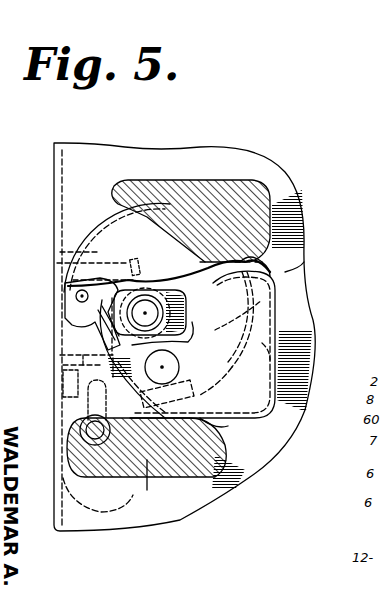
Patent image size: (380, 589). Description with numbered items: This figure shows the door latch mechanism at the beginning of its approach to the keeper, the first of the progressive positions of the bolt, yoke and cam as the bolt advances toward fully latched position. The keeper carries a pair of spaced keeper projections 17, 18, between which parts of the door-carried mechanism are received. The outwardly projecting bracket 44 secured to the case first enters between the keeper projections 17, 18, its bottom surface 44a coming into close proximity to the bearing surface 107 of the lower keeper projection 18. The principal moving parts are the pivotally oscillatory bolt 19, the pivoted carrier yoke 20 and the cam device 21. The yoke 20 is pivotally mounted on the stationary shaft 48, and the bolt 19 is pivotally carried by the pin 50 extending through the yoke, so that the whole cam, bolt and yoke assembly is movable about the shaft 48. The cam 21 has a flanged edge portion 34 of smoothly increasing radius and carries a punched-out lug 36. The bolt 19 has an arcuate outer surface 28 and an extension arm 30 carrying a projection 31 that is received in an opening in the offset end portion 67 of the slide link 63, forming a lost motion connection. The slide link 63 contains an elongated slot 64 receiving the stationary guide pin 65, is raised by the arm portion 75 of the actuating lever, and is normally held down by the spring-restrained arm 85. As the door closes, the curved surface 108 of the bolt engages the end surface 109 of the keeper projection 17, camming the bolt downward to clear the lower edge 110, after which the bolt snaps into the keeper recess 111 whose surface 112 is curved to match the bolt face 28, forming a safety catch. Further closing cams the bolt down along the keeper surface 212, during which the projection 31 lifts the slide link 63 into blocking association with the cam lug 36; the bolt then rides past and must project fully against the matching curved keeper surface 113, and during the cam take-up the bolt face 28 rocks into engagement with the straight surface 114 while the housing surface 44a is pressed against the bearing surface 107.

The keeper projection 17 is at (268, 243).
The keeper projection 18 is at (188, 470).
The bolt 19 is at (255, 343).
The carrier yoke 20 is at (95, 349).
The cam device 21 is at (90, 230).
The outer surface of bolt flange 28 is at (253, 317).
The extension arm 30 is at (80, 321).
The projection 31 is at (75, 298).
The flanged edge portion 34 is at (60, 252).
The punched-out lug 36 is at (137, 256).
The bracket 44 is at (268, 392).
The bottom surface of housing 44a is at (212, 425).
The stationary shaft 48 is at (168, 366).
The pin 50 is at (148, 313).
The slide link 63 is at (105, 500).
The elongated slot 64 is at (90, 408).
The guide pin 65 is at (94, 445).
The offset end portion 67 is at (57, 264).
The arm portion 75 is at (66, 383).
The arm 85 is at (87, 347).
The bearing surface 107 is at (147, 478).
The curved surface of bolt 108 is at (258, 287).
The end surface of keeper 109 is at (227, 277).
The lower edge of keeper 110 is at (245, 285).
The keeper recess 111 is at (257, 210).
The curved recess surface 112 is at (233, 265).
The curved keeper surface 113 is at (187, 262).
The straight surface 114 is at (163, 238).
The keeper surface 212 is at (227, 258).